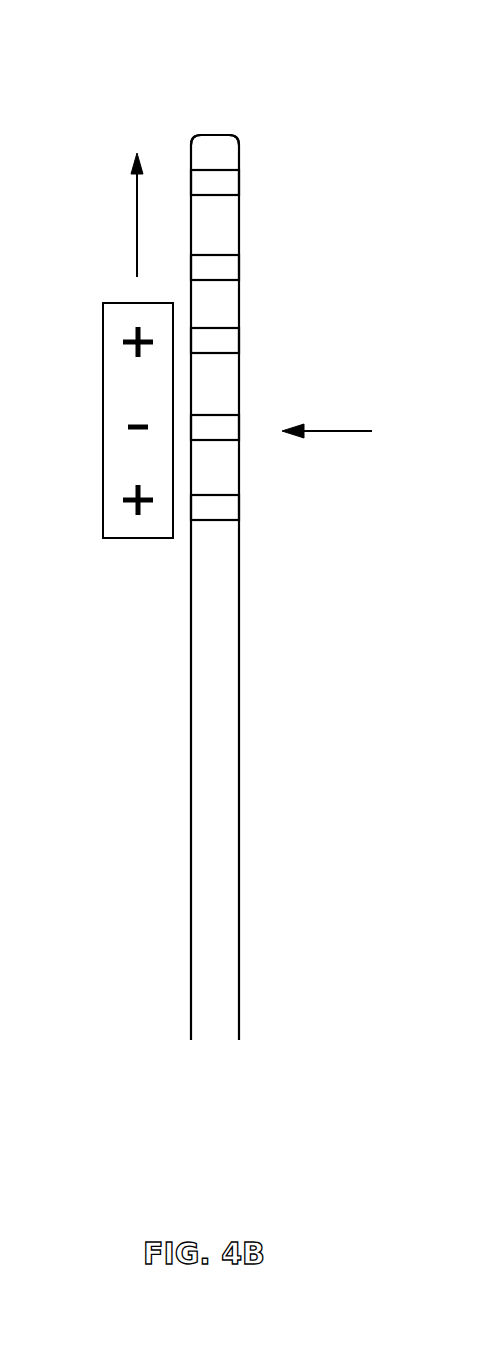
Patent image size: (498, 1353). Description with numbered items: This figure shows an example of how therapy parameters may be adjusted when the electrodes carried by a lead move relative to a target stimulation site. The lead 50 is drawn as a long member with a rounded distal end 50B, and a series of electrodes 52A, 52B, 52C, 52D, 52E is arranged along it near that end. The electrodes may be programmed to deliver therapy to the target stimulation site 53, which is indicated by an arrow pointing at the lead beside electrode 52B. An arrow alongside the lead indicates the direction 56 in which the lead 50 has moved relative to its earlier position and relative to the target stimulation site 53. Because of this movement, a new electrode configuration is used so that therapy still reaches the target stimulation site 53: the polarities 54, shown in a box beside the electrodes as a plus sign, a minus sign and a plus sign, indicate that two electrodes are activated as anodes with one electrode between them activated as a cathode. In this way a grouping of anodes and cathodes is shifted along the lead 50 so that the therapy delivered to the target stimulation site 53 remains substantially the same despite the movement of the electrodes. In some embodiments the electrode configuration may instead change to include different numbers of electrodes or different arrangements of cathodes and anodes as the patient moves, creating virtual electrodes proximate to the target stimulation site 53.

The lead 50 is at (239, 747).
The rounded distal end of rod 50B is at (210, 133).
The electrode 52A is at (240, 508).
The electrode 52B is at (240, 425).
The electrode 52C is at (240, 340).
The electrode 52D is at (240, 265).
The electrode 52E is at (240, 182).
The target stimulation site 53 is at (348, 432).
The polarities 54 is at (102, 422).
The direction 56 is at (136, 219).